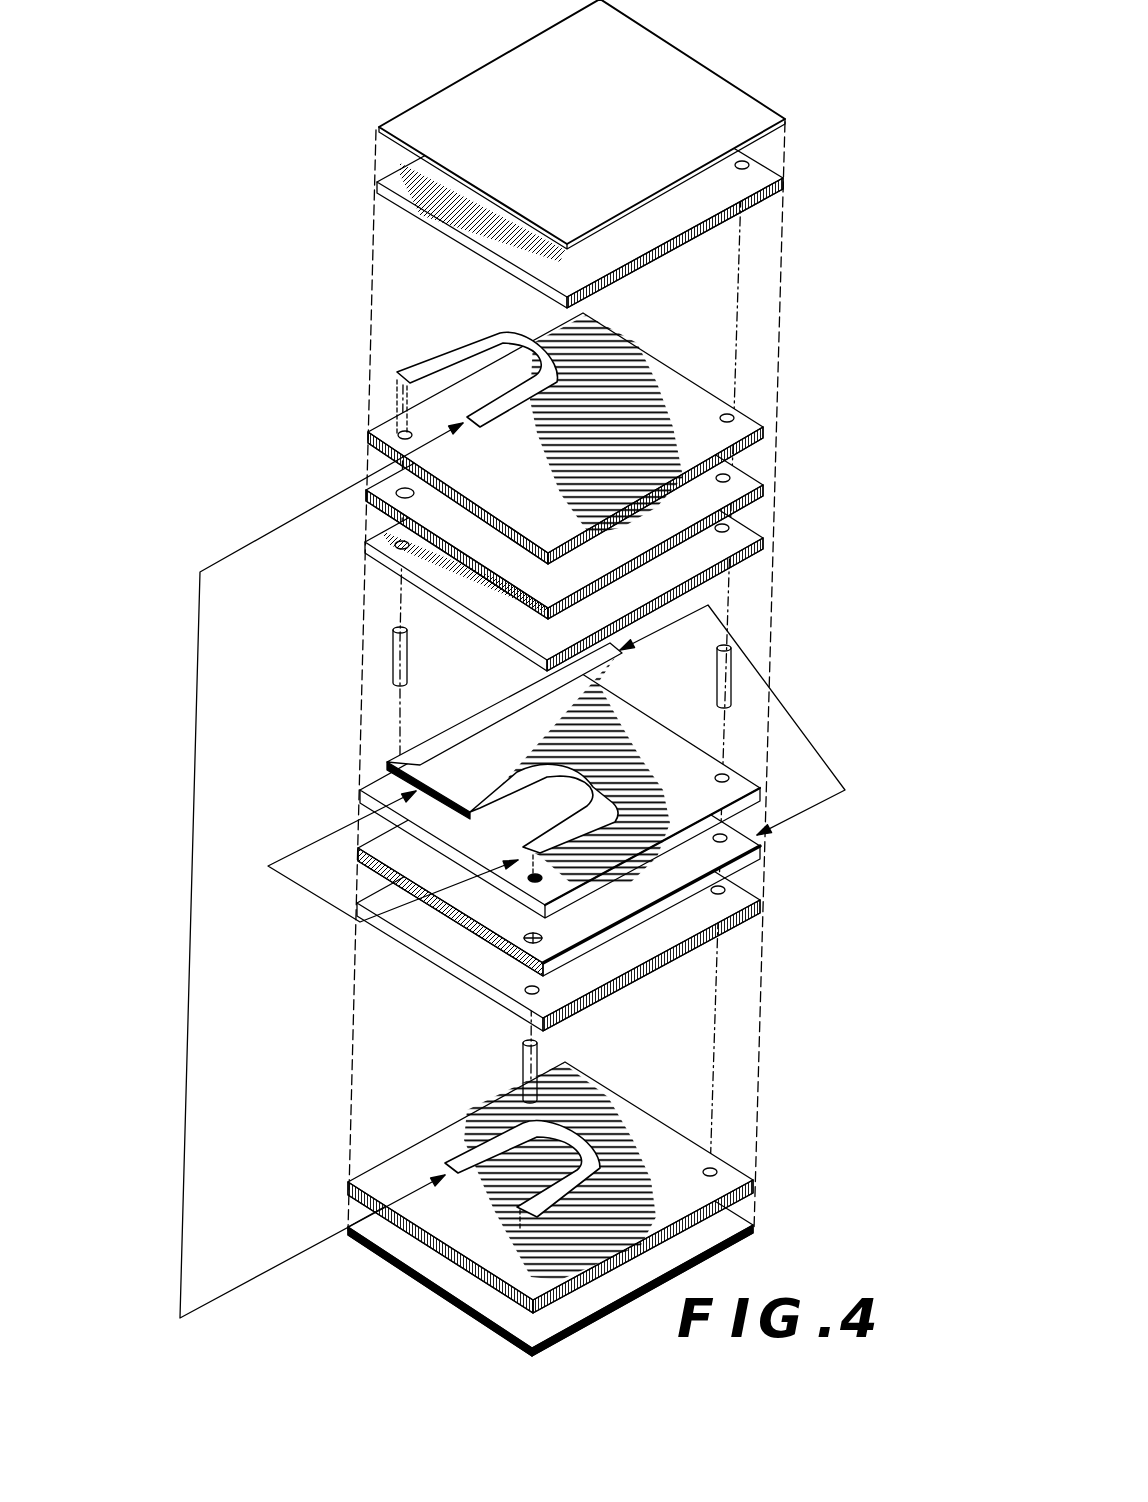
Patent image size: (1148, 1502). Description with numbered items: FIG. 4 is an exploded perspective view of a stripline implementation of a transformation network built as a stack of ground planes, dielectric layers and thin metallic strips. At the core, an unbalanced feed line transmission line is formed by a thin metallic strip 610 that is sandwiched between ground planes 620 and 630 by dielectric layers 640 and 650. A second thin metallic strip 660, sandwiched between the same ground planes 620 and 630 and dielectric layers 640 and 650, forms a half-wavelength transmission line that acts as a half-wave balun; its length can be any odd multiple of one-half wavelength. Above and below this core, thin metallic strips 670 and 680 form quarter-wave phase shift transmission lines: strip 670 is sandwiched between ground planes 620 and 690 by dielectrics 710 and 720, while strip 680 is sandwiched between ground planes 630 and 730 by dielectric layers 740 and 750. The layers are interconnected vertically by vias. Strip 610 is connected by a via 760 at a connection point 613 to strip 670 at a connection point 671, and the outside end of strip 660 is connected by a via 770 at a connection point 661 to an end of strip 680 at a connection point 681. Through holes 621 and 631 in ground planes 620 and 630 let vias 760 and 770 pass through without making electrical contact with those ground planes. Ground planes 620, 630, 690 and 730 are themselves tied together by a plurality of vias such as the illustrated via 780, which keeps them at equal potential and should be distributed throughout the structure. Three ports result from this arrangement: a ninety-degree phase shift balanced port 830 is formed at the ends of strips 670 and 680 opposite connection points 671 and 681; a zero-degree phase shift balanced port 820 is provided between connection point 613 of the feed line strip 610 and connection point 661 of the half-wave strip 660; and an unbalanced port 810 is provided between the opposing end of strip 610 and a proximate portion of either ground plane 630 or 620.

The ground plane 690 is at (758, 100).
The dielectric 720 is at (783, 178).
The thin metallic strip 670 is at (460, 298).
The connection point 671 is at (405, 368).
The dielectric 710 is at (763, 427).
The through hole 621 is at (402, 490).
The ground plane 620 is at (763, 490).
The dielectric layer 640 is at (763, 543).
The via 780 is at (735, 650).
The via 760 is at (393, 650).
The thin metallic strip 610 is at (503, 693).
The connection point 613 is at (386, 748).
The thin metallic strip 660 is at (593, 778).
The dielectric layer 650 is at (762, 787).
The ground plane 630 is at (762, 845).
The dielectric layer 740 is at (765, 900).
The through hole 631 is at (528, 938).
The connection point 661 is at (597, 780).
The via 770 is at (540, 1058).
The thin metallic strip 680 is at (490, 1135).
The dielectric layer 750 is at (748, 1182).
The ground plane 730 is at (748, 1230).
The connection point 681 is at (512, 1207).
The unbalanced port 810 is at (780, 690).
The 0° phase shift balanced port 820 is at (312, 893).
The 90° phase shift balanced port 830 is at (190, 933).